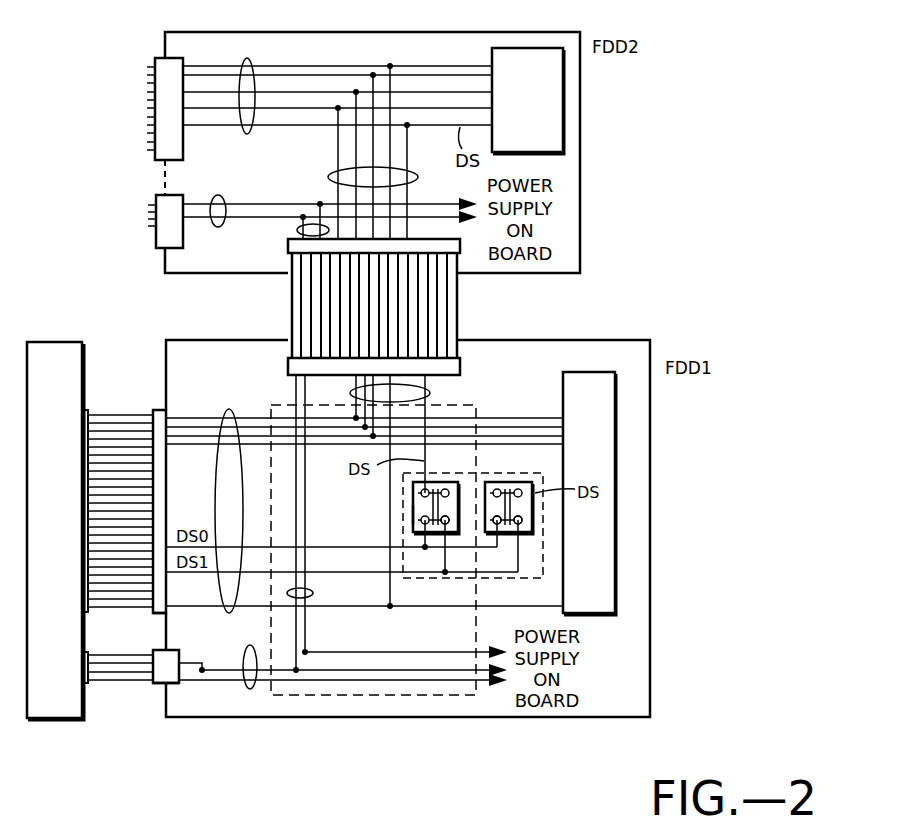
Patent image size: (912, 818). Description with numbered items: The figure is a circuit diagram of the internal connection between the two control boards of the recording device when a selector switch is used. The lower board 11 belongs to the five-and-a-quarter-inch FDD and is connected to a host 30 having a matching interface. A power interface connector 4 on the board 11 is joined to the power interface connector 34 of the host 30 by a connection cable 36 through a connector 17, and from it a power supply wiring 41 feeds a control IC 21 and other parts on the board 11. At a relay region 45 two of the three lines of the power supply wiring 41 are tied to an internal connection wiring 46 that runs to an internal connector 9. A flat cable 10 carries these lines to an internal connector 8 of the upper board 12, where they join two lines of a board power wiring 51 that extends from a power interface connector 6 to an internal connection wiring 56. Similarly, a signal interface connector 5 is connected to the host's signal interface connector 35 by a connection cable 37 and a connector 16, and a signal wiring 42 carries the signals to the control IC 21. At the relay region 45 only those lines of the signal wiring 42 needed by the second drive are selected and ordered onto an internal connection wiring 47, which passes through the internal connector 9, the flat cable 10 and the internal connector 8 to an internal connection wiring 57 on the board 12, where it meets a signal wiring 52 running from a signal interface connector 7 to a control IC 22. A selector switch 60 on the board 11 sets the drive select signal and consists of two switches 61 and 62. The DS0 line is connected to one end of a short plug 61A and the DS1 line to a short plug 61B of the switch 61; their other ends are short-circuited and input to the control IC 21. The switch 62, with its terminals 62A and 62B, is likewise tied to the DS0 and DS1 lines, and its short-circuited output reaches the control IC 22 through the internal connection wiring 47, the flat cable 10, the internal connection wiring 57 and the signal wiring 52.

The control board 12 is at (455, 40).
The signal interface connector 7 is at (160, 62).
The power interface connector 6 is at (160, 243).
The control IC 22 is at (553, 118).
The signal wiring 52 is at (247, 134).
The board power wiring 51 is at (218, 227).
The internal connection wiring 56 is at (297, 231).
The internal connection wiring 57 is at (413, 177).
The internal connector 8 is at (296, 253).
The flat cable 10 is at (300, 323).
The internal connector 9 is at (450, 366).
The internal connection wiring 47 is at (430, 393).
The control board 11 is at (615, 697).
The host 30 is at (57, 352).
The signal interface connector 35 is at (86, 410).
The connection cable 37 is at (130, 426).
The signal interface connector 5 is at (160, 410).
The connector 16 is at (158, 614).
The signal wiring 42 is at (237, 614).
The internal connection wiring 46 is at (313, 593).
The relay region 45 is at (367, 696).
The power supply wiring 41 is at (250, 690).
The power interface connector 34 is at (85, 684).
The connection cable 36 is at (118, 681).
The power interface connector 4 is at (172, 684).
The connector 17 is at (158, 686).
The control IC 21 is at (602, 614).
The selector switch 60 is at (492, 478).
The switch 62 is at (446, 482).
The switch 61 is at (527, 482).
The switch terminal 62A is at (413, 512).
The switch terminal 62B is at (447, 531).
The short plug 61A is at (507, 543).
The short plug 61B is at (532, 521).